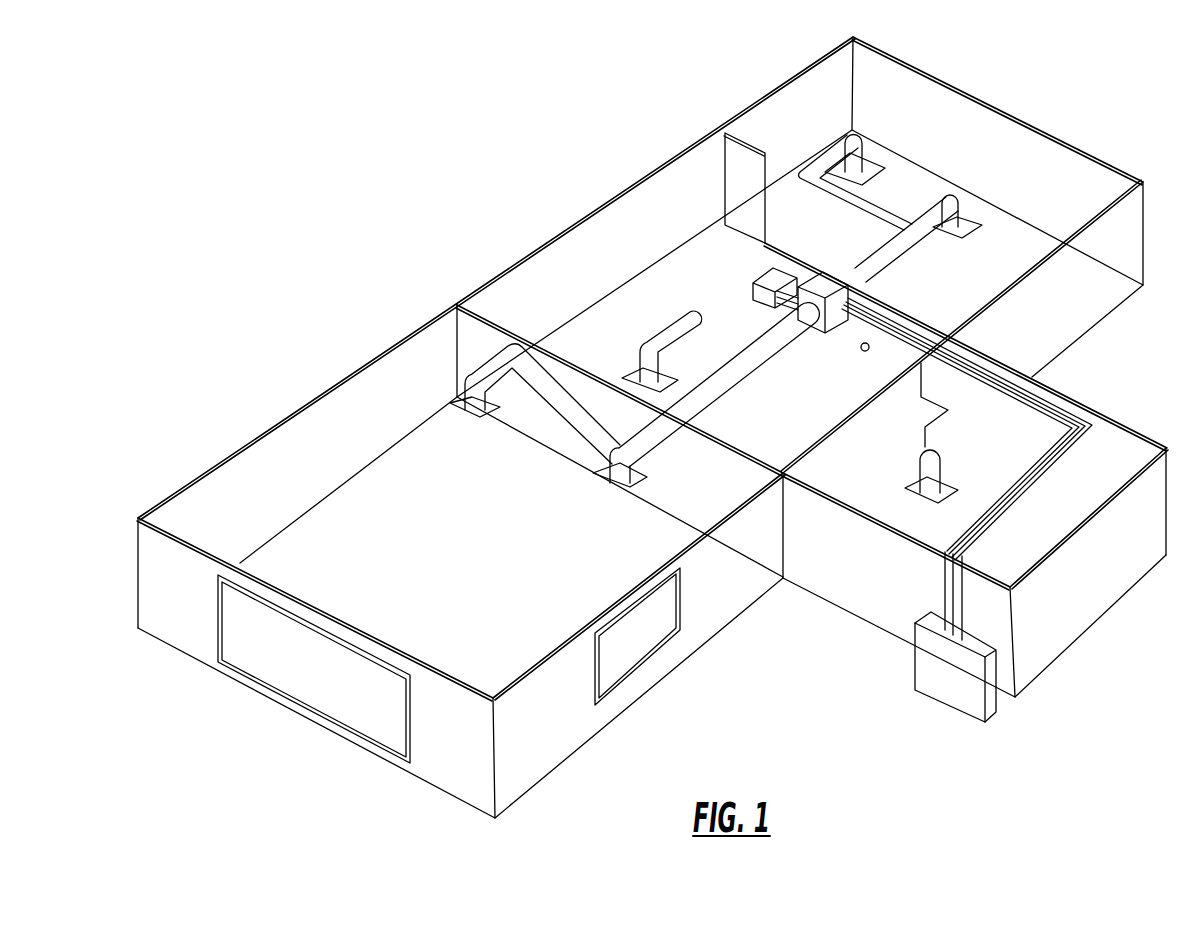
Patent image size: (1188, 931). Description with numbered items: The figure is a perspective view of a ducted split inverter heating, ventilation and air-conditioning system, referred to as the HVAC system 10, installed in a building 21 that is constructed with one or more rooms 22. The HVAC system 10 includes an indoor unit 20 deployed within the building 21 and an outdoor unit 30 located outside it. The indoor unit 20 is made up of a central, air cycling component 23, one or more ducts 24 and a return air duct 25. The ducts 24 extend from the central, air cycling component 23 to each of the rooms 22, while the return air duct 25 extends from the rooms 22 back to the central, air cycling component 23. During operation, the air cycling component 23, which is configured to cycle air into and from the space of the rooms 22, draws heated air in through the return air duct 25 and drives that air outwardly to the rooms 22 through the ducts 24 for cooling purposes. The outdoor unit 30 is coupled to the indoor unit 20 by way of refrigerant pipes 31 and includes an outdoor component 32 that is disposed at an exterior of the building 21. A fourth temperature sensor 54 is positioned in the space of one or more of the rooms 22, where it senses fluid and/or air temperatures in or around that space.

The HVAC system 10 is at (320, 234).
The indoor unit 20 is at (805, 268).
The building 21 is at (242, 467).
The rooms 22 is at (943, 291).
The central, air cycling component 23 is at (808, 350).
The ducts 24 is at (604, 497).
The return air duct 25 is at (752, 306).
The outdoor unit 30 is at (922, 682).
The refrigerant pipes 31 is at (965, 397).
The outdoor component 32 is at (955, 690).
The fourth temperature sensor 54 is at (869, 346).